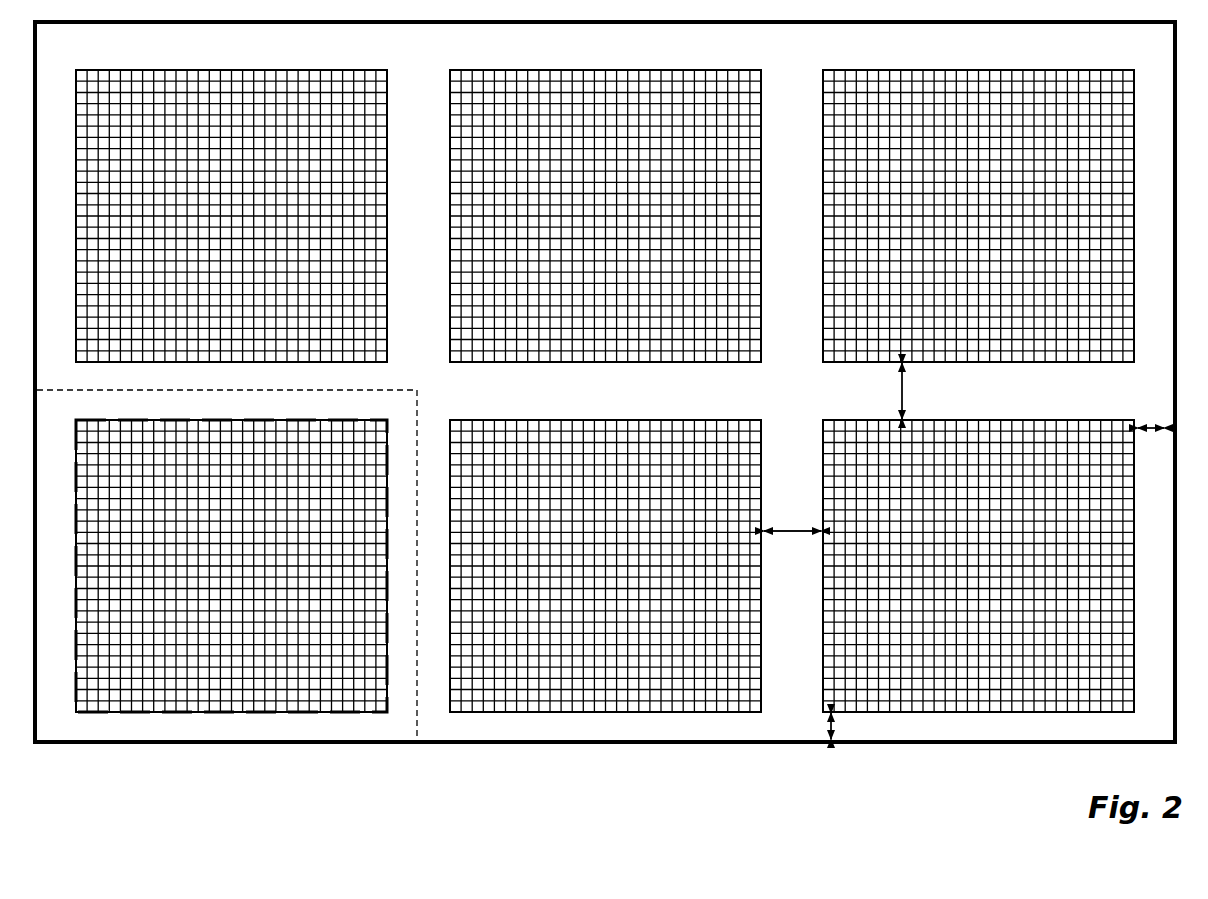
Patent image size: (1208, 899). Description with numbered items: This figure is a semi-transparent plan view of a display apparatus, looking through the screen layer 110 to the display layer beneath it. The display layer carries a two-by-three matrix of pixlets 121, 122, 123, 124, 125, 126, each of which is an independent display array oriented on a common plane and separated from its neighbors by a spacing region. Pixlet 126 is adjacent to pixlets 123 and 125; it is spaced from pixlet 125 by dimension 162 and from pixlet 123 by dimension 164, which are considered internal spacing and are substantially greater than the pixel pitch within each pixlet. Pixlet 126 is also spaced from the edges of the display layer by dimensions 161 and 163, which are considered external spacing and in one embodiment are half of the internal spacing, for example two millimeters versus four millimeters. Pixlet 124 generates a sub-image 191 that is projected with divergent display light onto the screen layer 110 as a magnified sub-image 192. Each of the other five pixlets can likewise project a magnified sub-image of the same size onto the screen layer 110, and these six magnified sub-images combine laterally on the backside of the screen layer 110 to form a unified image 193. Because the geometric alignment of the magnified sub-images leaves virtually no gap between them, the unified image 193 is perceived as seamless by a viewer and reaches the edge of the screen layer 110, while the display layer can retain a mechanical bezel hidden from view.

The screen layer 110 is at (230, 728).
The pixlet 121 is at (368, 290).
The pixlet 122 is at (750, 290).
The pixlet 123 is at (845, 100).
The pixlet 124 is at (160, 440).
The pixlet 125 is at (698, 428).
The pixlet 126 is at (862, 433).
The dimension 161 is at (828, 725).
The dimension 162 is at (796, 533).
The dimension 163 is at (1148, 425).
The dimension 164 is at (905, 390).
The sub-image 191 is at (386, 710).
The magnified sub-image 192 is at (420, 406).
The unified image 193 is at (572, 745).